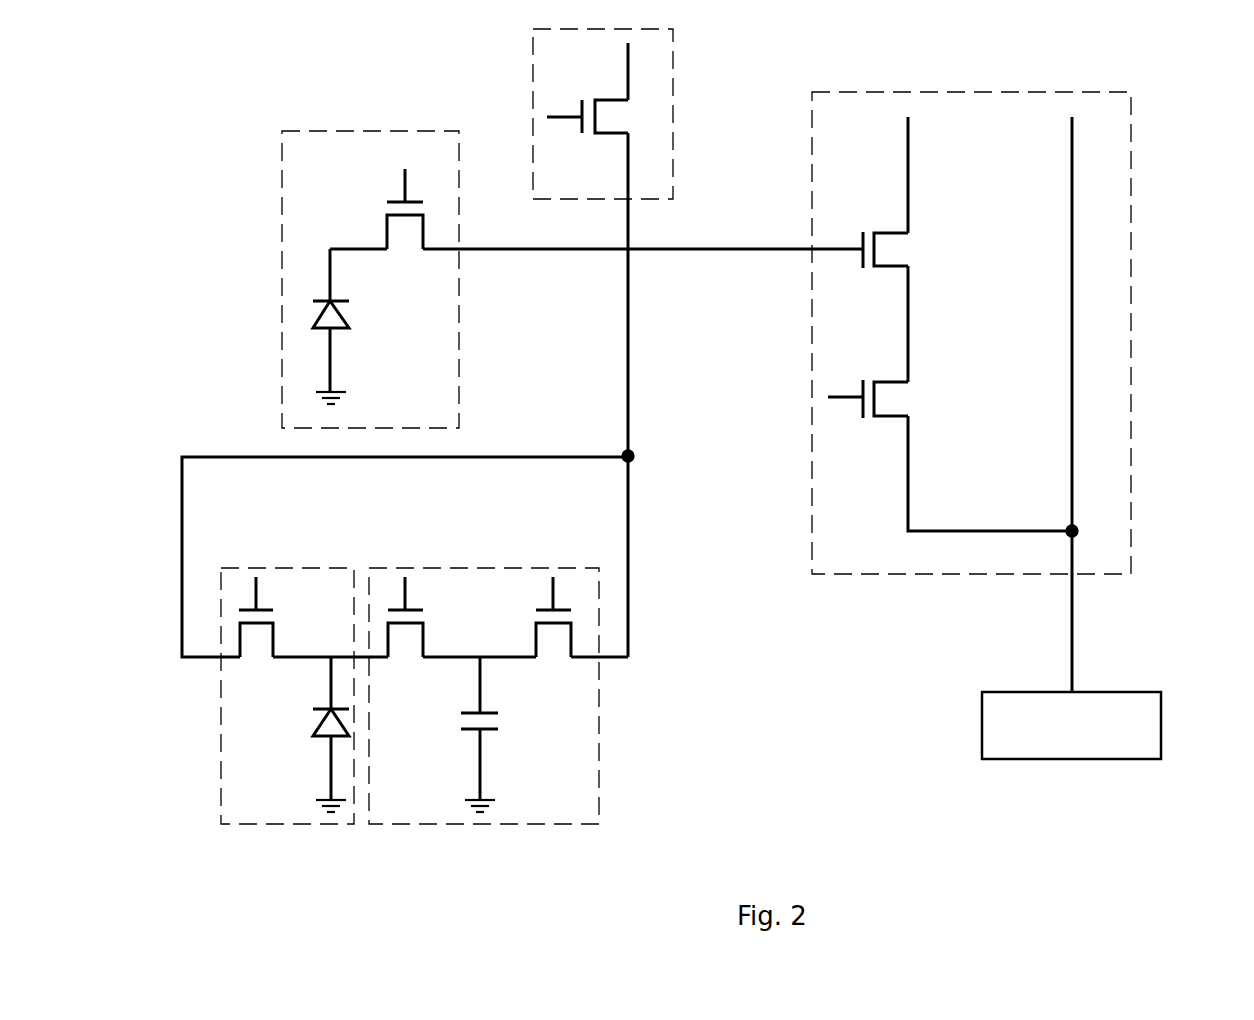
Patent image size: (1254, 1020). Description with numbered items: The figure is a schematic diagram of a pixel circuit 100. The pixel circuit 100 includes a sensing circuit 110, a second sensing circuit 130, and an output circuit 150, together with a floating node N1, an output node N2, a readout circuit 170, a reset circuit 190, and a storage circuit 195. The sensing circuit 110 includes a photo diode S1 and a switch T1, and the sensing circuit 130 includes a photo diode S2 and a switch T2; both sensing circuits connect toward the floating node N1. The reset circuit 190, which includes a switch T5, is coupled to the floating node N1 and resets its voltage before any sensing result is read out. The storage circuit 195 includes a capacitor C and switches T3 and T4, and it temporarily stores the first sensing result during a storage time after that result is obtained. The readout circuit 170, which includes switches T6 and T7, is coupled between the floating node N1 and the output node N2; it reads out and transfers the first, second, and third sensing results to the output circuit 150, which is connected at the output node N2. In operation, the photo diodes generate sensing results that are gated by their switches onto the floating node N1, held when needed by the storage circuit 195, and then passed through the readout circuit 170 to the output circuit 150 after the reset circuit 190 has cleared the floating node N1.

The pixel circuit 100 is at (146, 42).
The sensing circuit 110 is at (286, 566).
The sensing circuit 130 is at (338, 130).
The output circuit 150 is at (1094, 740).
The readout circuit 170 is at (1131, 147).
The reset circuit 190 is at (673, 36).
The storage circuit 195 is at (483, 566).
The floating node N1 is at (634, 453).
The output node N2 is at (1062, 526).
The switch T1 is at (257, 634).
The switch T2 is at (405, 227).
The switch T3 is at (554, 634).
The switch T4 is at (405, 634).
The switch T5 is at (608, 117).
The switch T6 is at (908, 250).
The switch T7 is at (891, 399).
The photo diode S1 is at (313, 734).
The photo diode S2 is at (349, 326).
The capacitor C is at (492, 734).